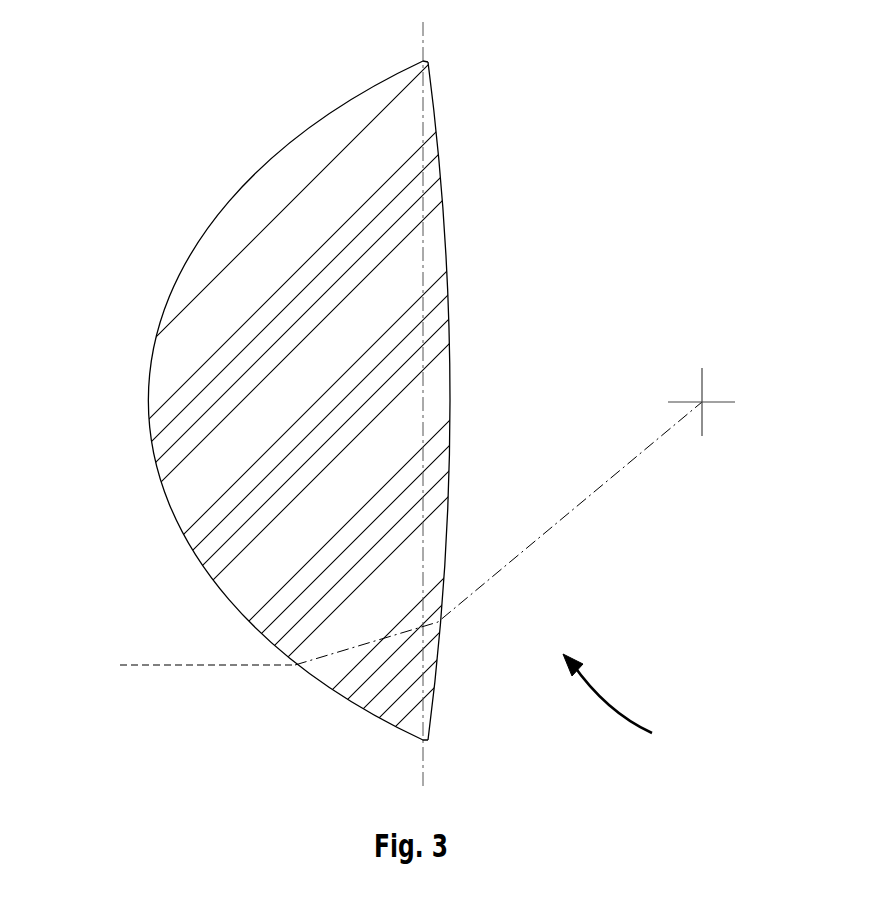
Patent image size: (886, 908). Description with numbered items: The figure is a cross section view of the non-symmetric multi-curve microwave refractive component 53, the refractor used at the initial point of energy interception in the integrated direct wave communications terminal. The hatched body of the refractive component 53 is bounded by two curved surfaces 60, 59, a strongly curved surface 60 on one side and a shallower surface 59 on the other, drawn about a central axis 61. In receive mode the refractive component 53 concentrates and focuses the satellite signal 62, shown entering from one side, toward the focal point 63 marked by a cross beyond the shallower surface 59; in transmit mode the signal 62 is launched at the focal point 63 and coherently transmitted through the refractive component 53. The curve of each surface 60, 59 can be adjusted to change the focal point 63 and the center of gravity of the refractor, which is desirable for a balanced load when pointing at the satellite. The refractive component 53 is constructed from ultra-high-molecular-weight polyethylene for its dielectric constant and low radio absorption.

The non-symmetric multi-curve microwave refractive component 53 is at (627, 703).
The surface 59 is at (438, 173).
The surface 60 is at (228, 200).
The optical axis 61 is at (422, 47).
The satellite signal 62 is at (152, 665).
The focal point 63 is at (720, 400).